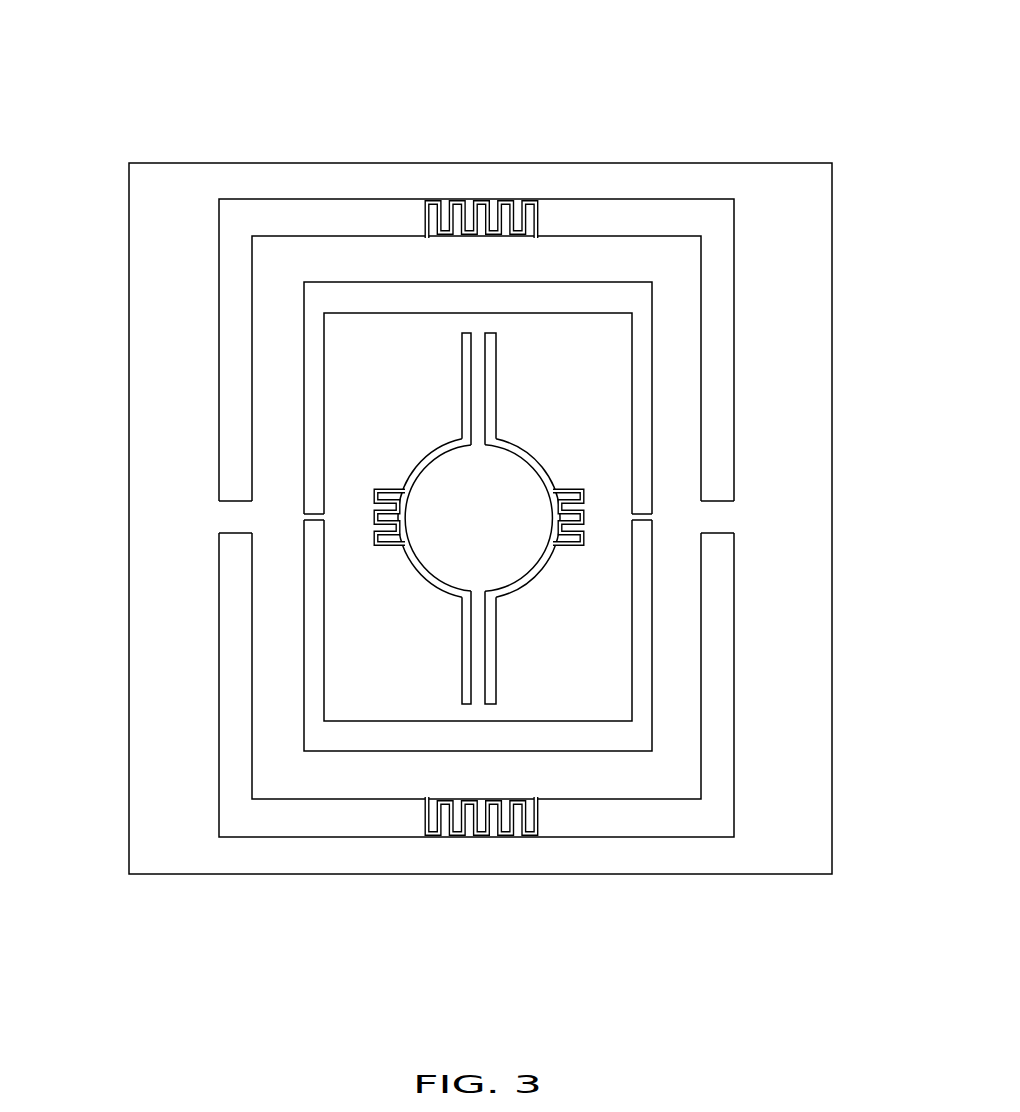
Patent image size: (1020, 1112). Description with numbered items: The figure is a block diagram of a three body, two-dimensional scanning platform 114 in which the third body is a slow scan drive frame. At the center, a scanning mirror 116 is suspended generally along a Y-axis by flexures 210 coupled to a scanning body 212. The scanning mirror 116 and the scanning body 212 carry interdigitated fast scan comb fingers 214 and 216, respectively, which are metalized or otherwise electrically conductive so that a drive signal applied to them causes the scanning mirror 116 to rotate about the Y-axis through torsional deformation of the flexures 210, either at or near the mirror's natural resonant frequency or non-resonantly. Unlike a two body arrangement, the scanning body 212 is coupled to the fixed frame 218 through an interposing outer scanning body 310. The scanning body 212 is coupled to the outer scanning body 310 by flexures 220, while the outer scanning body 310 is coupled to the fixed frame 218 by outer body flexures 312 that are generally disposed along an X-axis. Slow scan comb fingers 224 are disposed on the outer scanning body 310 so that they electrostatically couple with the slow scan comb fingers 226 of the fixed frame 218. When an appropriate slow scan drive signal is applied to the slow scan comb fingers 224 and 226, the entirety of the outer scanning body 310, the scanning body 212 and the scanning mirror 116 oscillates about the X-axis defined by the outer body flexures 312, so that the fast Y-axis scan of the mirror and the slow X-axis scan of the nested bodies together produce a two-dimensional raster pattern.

The scanning platform 114 is at (834, 73).
The scanning mirror 116 is at (643, 518).
The flexures 210 is at (488, 375).
The scanning body 212 is at (479, 516).
The fast scan comb fingers 214 is at (501, 548).
The fast scan comb fingers 216 is at (568, 547).
The fixed frame 218 is at (808, 283).
The flexures 220 is at (318, 521).
The slow scan comb fingers 224 is at (513, 502).
The slow scan comb fingers 226 is at (540, 210).
The outer scanning body 310 is at (477, 503).
The outer body flexures 312 is at (234, 536).